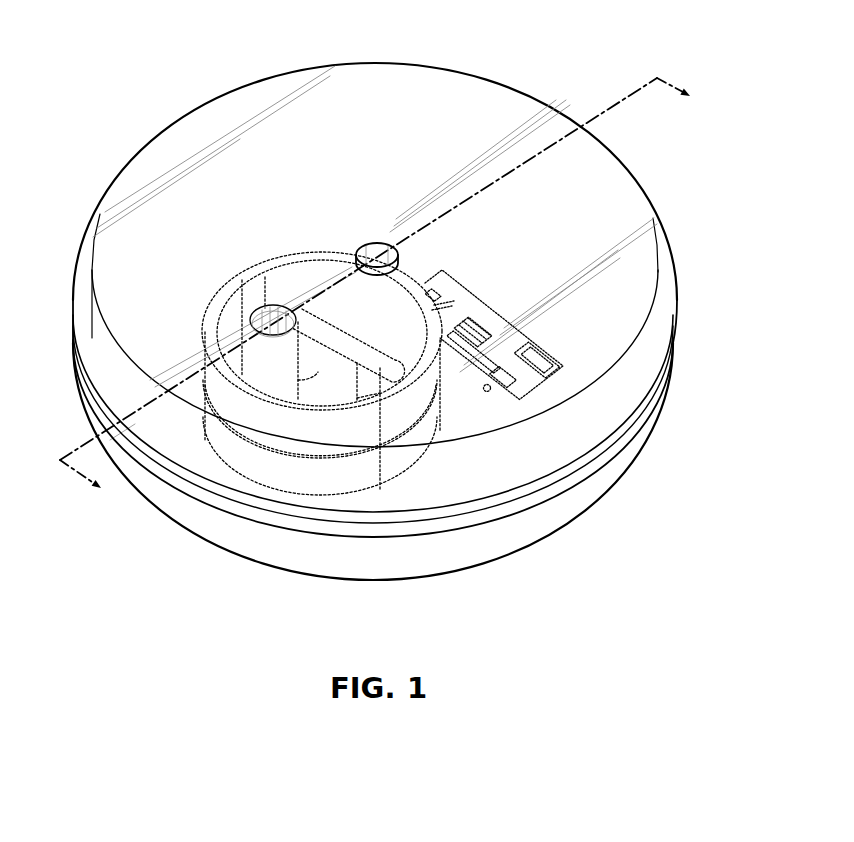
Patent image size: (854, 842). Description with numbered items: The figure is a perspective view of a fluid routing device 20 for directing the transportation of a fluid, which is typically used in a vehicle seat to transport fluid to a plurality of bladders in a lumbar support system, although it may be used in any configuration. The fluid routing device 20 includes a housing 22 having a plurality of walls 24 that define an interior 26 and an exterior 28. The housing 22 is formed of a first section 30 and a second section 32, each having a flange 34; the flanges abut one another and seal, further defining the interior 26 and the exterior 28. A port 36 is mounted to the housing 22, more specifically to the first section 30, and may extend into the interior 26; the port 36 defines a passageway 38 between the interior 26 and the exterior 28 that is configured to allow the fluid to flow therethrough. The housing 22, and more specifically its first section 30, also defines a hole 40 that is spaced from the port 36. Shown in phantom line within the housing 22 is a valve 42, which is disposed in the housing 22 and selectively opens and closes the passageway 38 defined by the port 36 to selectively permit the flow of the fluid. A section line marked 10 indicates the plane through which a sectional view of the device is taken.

The section line 10- 10 is at (385, 294).
The fluid routing device 20 is at (174, 73).
The housing 22 is at (134, 148).
The walls 24 is at (607, 187).
The interior 26 is at (268, 192).
The exterior 28 is at (481, 25).
The first section 30 is at (507, 103).
The second section 32 is at (448, 563).
The flange 34 is at (668, 374).
The port 36 is at (263, 357).
The passageway 38 is at (276, 311).
The hole 40 is at (376, 247).
The valve 42 is at (437, 262).